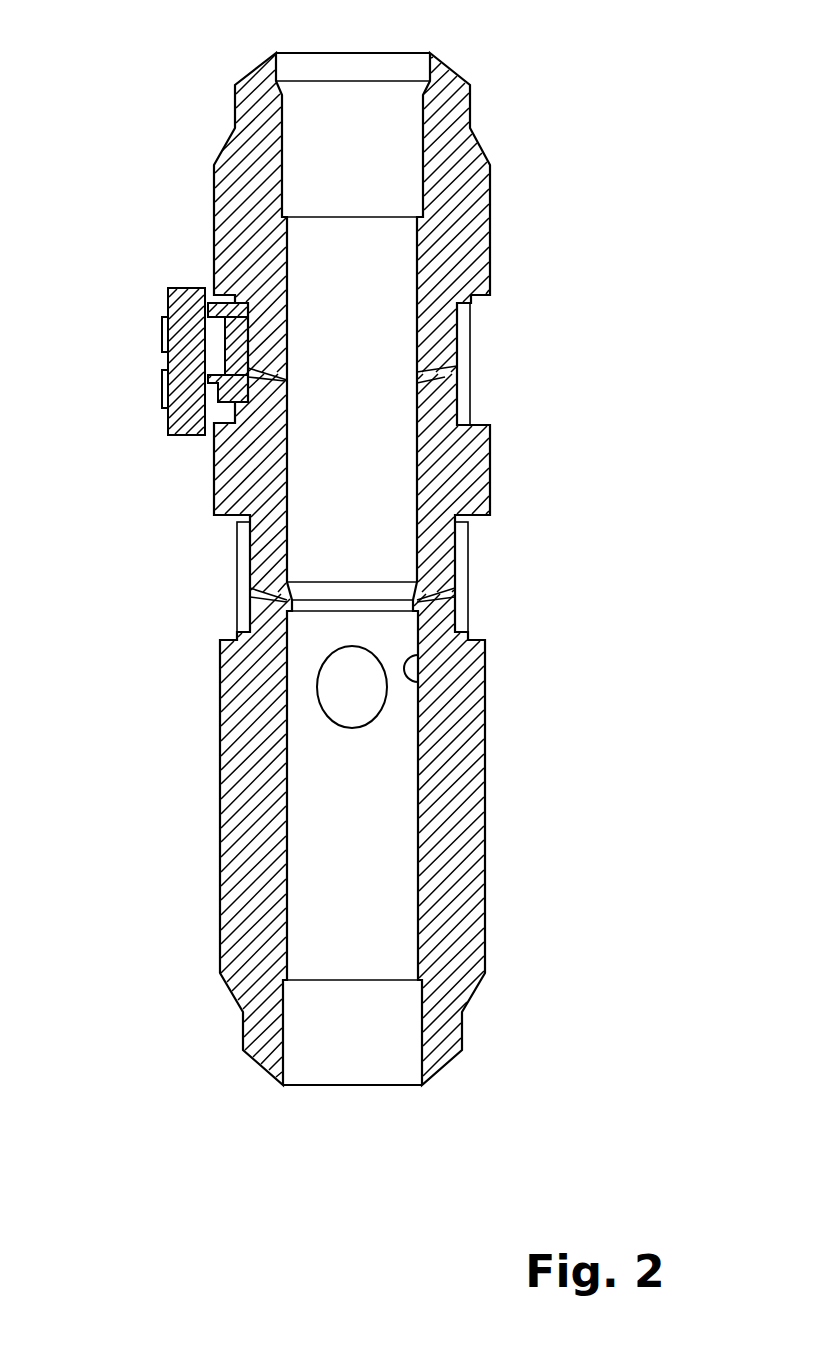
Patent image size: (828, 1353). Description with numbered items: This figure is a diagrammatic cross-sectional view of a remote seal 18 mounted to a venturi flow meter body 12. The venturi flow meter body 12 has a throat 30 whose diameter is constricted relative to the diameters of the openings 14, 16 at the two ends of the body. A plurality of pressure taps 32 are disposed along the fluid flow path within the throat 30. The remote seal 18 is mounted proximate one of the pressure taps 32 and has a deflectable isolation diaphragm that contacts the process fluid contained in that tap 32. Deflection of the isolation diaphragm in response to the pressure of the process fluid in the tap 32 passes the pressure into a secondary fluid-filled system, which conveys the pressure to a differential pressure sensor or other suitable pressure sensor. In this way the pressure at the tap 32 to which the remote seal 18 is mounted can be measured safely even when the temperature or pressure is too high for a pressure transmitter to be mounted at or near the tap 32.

The venturi flow meter body 12 is at (489, 752).
The opening 14 is at (399, 63).
The opening 16 is at (380, 1087).
The remote seal 18 is at (178, 333).
The throat 30 is at (412, 680).
The pressure taps 32 is at (282, 374).